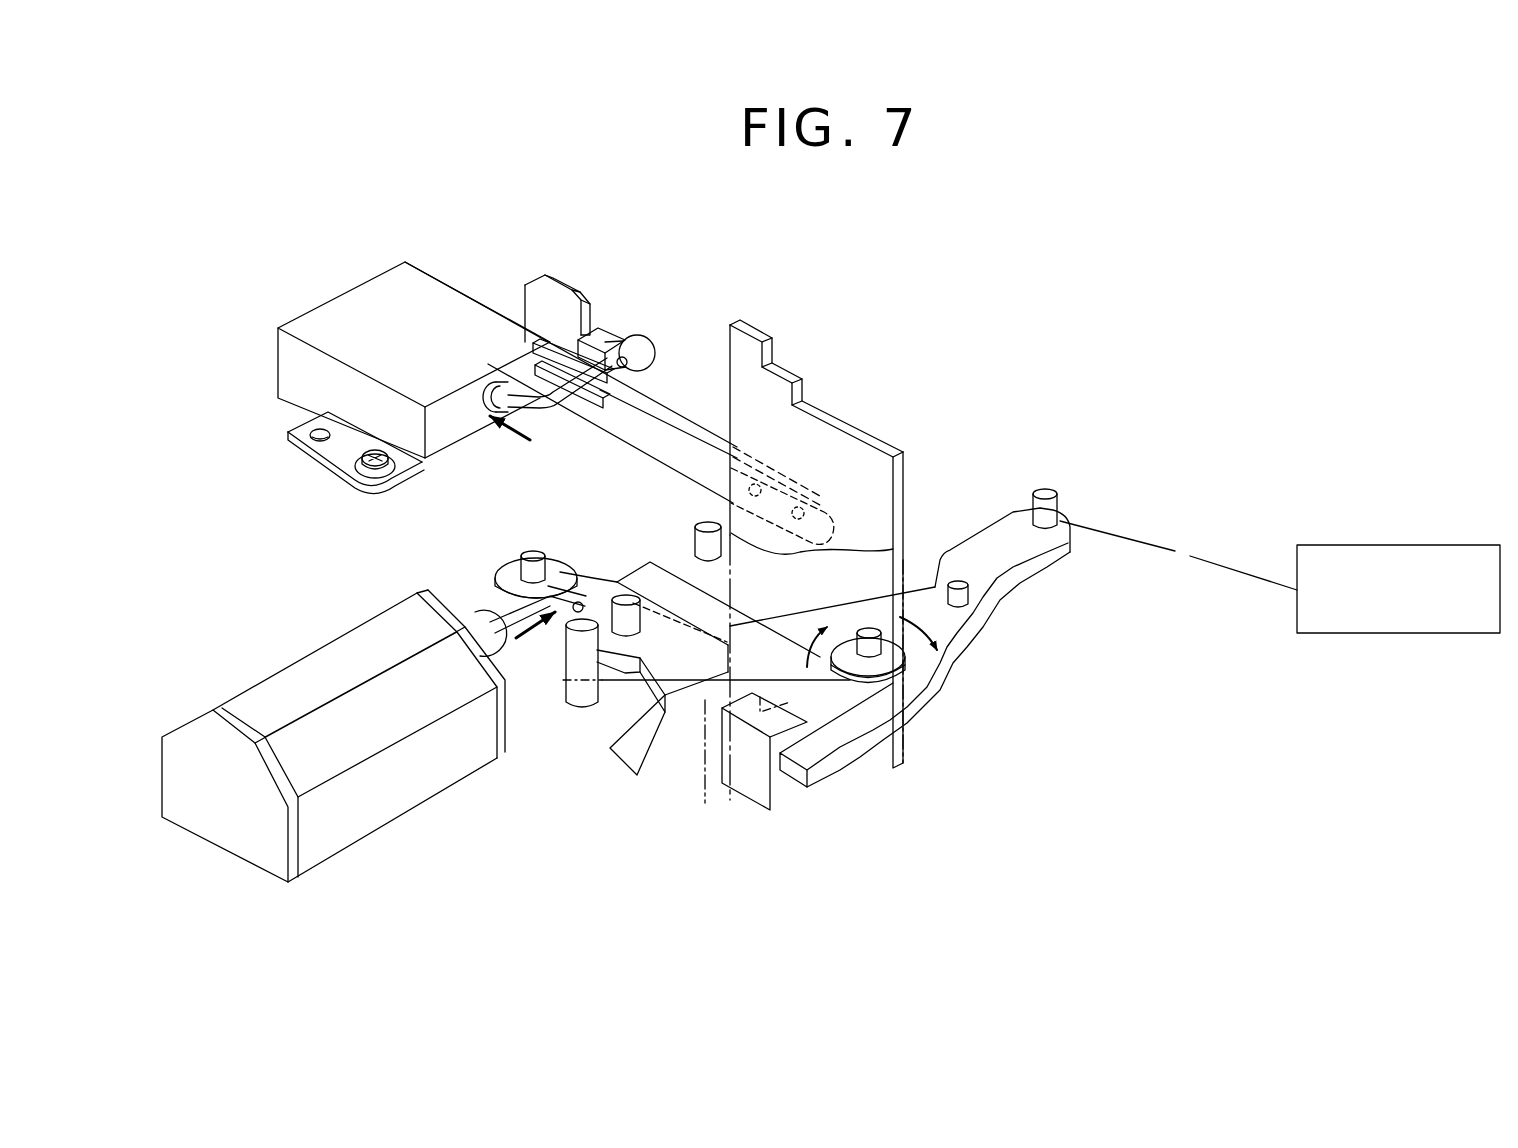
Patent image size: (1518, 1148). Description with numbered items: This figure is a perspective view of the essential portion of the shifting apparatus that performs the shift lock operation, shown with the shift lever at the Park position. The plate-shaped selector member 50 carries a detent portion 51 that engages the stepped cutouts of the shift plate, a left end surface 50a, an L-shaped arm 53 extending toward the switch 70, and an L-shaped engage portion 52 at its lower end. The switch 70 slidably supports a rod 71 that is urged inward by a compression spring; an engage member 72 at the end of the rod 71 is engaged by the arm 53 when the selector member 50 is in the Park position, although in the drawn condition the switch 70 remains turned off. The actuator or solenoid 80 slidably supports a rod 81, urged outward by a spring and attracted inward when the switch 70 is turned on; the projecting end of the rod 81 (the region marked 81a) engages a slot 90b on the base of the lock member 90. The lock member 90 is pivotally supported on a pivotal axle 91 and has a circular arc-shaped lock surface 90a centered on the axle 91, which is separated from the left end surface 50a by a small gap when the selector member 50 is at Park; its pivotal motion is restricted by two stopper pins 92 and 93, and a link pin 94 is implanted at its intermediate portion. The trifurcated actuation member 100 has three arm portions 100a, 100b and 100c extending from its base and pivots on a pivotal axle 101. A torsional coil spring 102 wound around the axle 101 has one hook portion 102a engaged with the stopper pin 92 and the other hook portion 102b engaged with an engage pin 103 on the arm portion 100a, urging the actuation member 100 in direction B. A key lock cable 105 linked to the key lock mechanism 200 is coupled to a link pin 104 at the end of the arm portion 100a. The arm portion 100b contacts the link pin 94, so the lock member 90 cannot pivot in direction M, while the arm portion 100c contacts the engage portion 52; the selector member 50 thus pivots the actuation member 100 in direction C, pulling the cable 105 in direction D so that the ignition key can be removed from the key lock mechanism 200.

The selector member 50 is at (898, 452).
The left end surface 50a is at (708, 790).
The detent portion 51 is at (745, 330).
The engage portion 52 is at (788, 797).
The arm 53 is at (670, 413).
The switch 70 is at (357, 313).
The rod 71 is at (530, 410).
The engage member 72 is at (622, 325).
The actuator (solenoid) 80 is at (213, 818).
The rod 81 is at (497, 618).
The crank pin 81a is at (545, 625).
The lock member 90 is at (623, 668).
The lock surface 90a is at (675, 735).
The slot 90b is at (587, 600).
The pivotal axle 91 is at (520, 577).
The stopper pin 92 is at (580, 705).
The stopper pin 93 is at (706, 522).
The link pin 94 is at (634, 590).
The actuation member 100 is at (915, 680).
The arm portion 100a is at (1000, 557).
The arm portion 100b is at (645, 545).
The arm portion 100c is at (850, 748).
The pivotal axle 101 is at (853, 637).
The torsional coil spring 102 is at (940, 621).
The hook portion 102a is at (563, 695).
The hook portion 102b is at (940, 560).
The engage pin 103 is at (985, 612).
The link pin 104 is at (1058, 508).
The key lock cable 105 is at (1218, 578).
The key lock mechanism 200 is at (1386, 545).